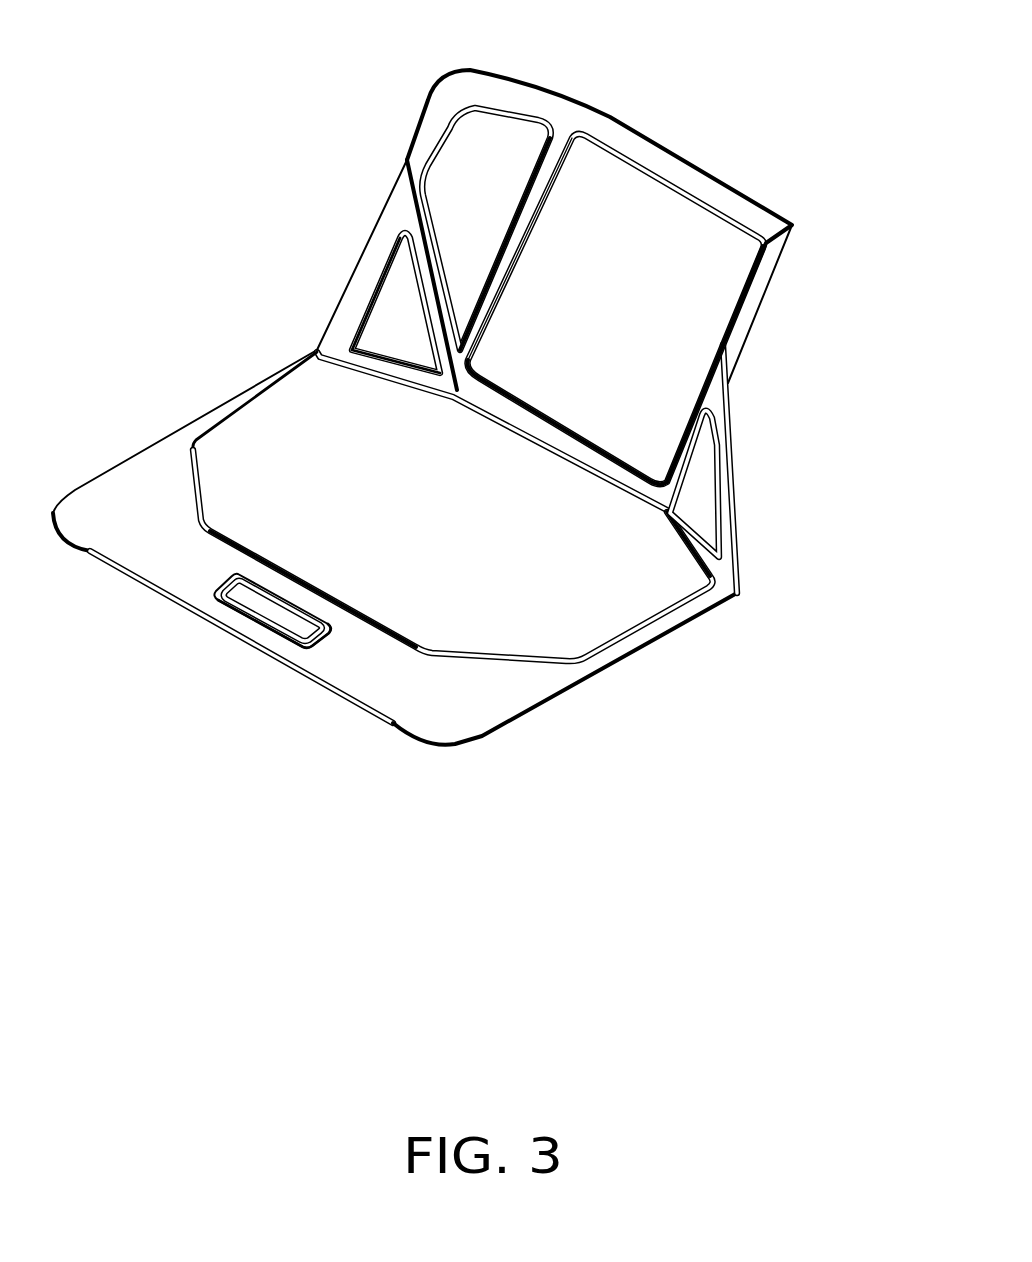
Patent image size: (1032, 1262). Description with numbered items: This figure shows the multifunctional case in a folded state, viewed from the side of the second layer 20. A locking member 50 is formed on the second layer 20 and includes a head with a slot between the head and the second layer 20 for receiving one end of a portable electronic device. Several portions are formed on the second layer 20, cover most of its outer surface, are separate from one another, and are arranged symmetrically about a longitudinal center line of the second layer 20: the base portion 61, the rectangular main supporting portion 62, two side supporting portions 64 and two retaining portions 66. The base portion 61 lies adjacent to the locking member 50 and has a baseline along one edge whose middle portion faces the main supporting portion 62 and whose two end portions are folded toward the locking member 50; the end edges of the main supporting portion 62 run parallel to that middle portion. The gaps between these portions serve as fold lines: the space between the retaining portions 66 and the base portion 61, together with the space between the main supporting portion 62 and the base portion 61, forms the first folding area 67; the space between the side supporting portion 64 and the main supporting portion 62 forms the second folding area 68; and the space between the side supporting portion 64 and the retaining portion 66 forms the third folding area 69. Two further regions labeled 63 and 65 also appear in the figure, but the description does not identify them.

The second layer 20 is at (458, 693).
The locking member 50 is at (278, 624).
The base portion 61 is at (548, 607).
The main supporting portion 62 is at (633, 250).
The second opening 63 is at (483, 178).
The side supporting portion 64 is at (752, 292).
The third opening 65 is at (388, 297).
The retaining portion 66 is at (697, 497).
The first folding area 67 is at (597, 480).
The second folding area 68 is at (555, 162).
The third folding area 69 is at (420, 225).